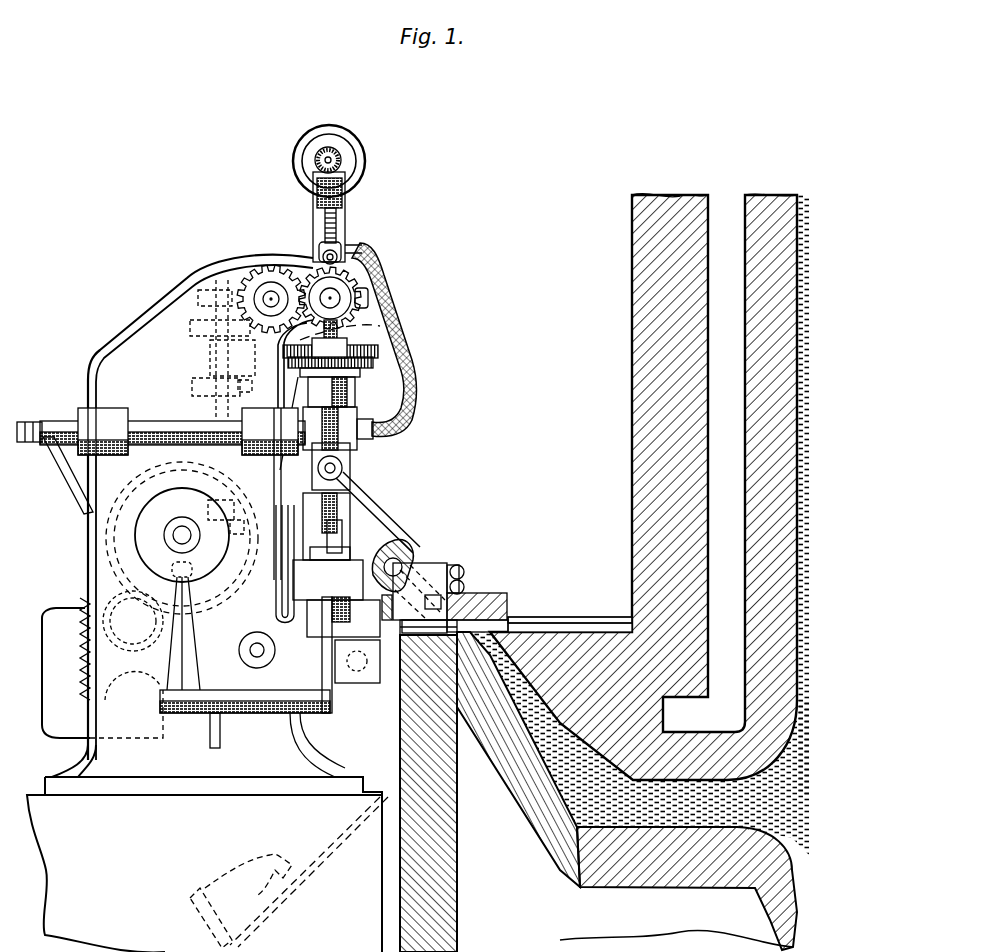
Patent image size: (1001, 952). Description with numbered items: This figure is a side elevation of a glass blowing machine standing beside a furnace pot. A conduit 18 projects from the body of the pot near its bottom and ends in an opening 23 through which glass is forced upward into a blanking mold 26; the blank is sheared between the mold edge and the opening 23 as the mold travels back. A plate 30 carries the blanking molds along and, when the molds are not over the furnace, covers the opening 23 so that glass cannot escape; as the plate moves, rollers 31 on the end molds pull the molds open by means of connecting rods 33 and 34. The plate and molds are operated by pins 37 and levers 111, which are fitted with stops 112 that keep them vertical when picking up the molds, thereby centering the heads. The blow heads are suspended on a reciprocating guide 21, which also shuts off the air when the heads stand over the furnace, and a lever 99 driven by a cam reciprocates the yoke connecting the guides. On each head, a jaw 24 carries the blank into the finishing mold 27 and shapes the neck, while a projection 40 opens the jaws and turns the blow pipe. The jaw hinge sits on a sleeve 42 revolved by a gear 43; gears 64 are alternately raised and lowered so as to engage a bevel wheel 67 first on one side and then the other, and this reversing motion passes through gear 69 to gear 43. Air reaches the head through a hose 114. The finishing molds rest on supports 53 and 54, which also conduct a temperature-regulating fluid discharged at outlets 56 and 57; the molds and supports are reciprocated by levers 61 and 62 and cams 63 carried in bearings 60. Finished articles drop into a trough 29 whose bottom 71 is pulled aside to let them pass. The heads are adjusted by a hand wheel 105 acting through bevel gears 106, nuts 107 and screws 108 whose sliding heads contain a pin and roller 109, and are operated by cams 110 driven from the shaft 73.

The conduit 18 is at (540, 805).
The reciprocating guide 21 is at (161, 427).
The opening 23 is at (560, 626).
The jaw 24 is at (400, 569).
The blanking mold 26 is at (445, 563).
The finishing mold 27 is at (395, 591).
The trough 29 is at (318, 879).
The plate 30 is at (508, 617).
The roller 31 is at (512, 627).
The connecting rod 33 is at (463, 579).
The connecting rod 34 is at (463, 591).
The pin 37 is at (475, 601).
The projection 40 is at (345, 509).
The sleeve 42 is at (342, 477).
The gear 43 is at (374, 364).
The support 53 is at (352, 689).
The support 54 is at (245, 690).
The outlet 56 is at (182, 538).
The outlet 57 is at (292, 509).
The bearing 60 is at (336, 598).
The lever 61 is at (296, 723).
The lever 62 is at (193, 633).
The cam 63 is at (180, 549).
The gear 64 is at (200, 373).
The bevel wheel 67 is at (380, 323).
The gear 69 is at (378, 353).
The trough bottom 71 is at (188, 898).
The shaft 73 is at (170, 538).
The lever 99 is at (80, 491).
The hand wheel 105 is at (366, 165).
The bevel gear 106 is at (316, 156).
The nut 107 is at (313, 182).
The screw 108 is at (337, 223).
The pin and roller 109 is at (340, 261).
The cam 110 is at (368, 299).
The lever 111 is at (383, 553).
The stop 112 is at (303, 453).
The hose 114 is at (418, 395).